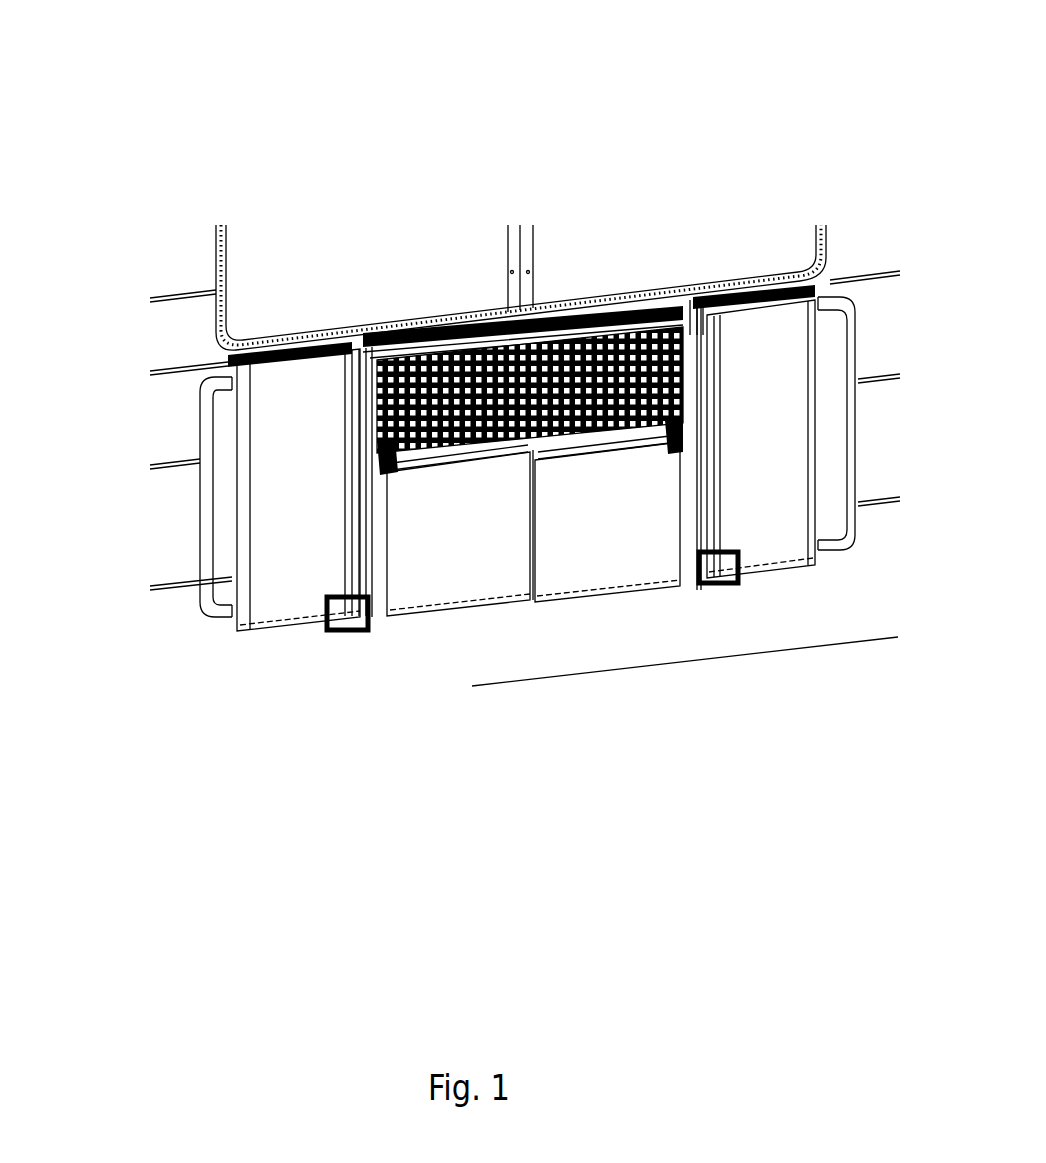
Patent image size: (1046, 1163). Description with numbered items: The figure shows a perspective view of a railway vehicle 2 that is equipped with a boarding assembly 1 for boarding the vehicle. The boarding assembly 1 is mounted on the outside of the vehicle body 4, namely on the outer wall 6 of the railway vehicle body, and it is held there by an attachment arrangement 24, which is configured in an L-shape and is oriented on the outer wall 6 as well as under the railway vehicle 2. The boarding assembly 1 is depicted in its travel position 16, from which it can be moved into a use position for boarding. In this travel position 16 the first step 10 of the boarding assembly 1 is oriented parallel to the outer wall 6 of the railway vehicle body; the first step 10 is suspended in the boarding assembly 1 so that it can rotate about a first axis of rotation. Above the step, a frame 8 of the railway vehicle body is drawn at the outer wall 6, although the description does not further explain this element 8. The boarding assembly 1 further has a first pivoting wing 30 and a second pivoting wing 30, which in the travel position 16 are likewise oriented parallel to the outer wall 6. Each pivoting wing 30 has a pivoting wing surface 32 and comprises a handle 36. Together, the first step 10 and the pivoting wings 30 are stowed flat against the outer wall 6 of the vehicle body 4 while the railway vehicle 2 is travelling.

The boarding assembly 1 is at (642, 646).
The railway vehicle 2 is at (330, 112).
The vehicle body 4 is at (182, 480).
The outer wall 6 is at (182, 435).
The frame 8 is at (380, 300).
The first step 10 is at (380, 370).
The travel position 16 is at (674, 607).
The attachment arrangement 24 is at (423, 595).
The pivoting wing 30 is at (180, 497).
The pivoting wing surface 32 is at (285, 548).
The handle 36 is at (208, 520).